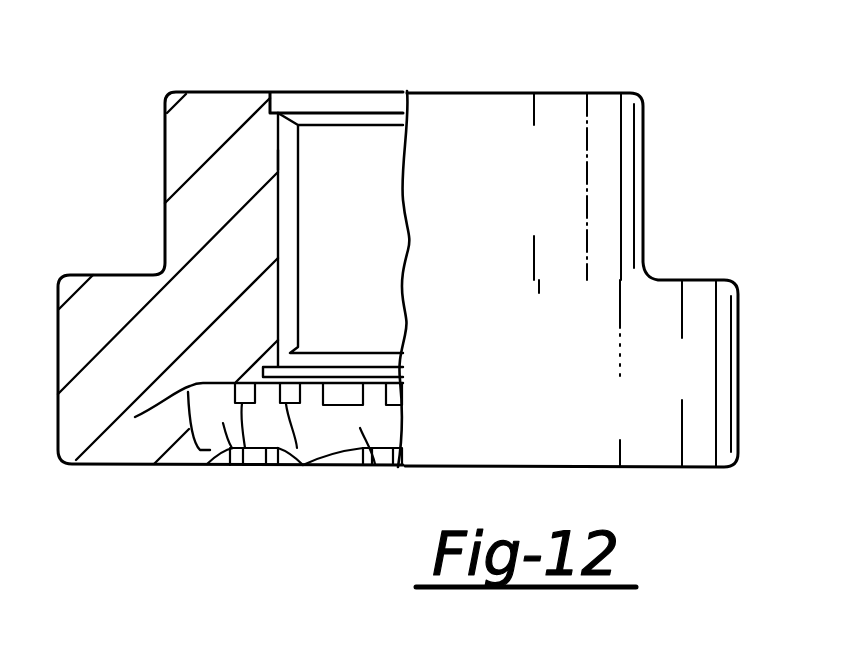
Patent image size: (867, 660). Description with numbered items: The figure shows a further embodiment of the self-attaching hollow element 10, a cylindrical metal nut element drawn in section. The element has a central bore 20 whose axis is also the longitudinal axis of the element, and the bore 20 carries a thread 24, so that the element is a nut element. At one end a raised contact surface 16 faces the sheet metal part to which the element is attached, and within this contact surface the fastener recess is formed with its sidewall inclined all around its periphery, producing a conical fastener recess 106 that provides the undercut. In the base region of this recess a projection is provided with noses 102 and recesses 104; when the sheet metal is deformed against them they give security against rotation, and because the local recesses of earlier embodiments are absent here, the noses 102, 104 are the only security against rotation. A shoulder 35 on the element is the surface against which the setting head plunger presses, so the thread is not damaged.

The self-attaching hollow element 10 is at (648, 185).
The contact surface 16 is at (97, 466).
The bore 20 is at (300, 188).
The thread 24 is at (277, 158).
The shoulder 35 is at (118, 274).
The noses 102 is at (290, 423).
The recesses 104 is at (372, 397).
The conical fastener recess 106 is at (140, 415).